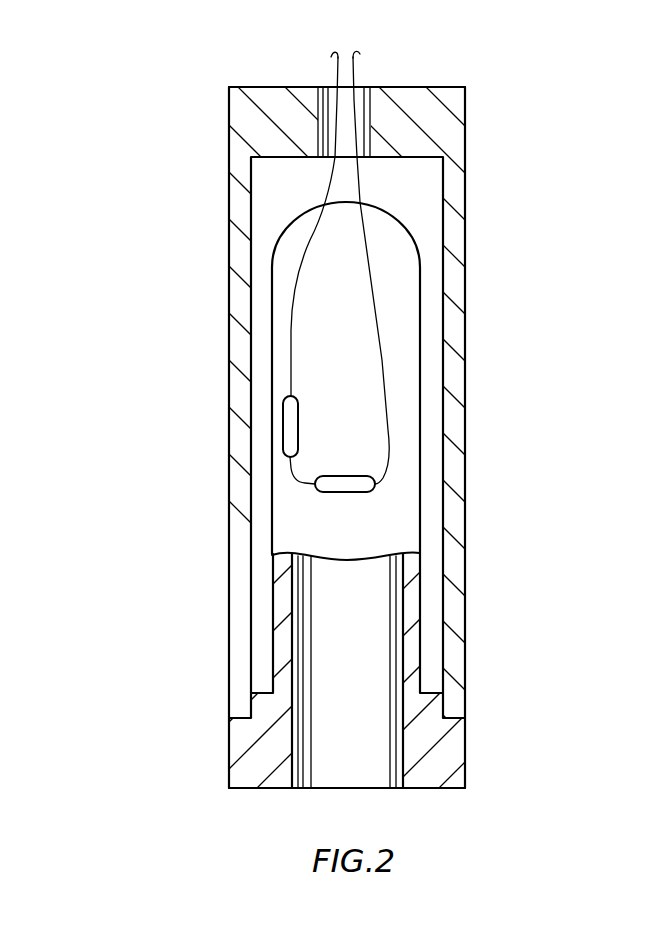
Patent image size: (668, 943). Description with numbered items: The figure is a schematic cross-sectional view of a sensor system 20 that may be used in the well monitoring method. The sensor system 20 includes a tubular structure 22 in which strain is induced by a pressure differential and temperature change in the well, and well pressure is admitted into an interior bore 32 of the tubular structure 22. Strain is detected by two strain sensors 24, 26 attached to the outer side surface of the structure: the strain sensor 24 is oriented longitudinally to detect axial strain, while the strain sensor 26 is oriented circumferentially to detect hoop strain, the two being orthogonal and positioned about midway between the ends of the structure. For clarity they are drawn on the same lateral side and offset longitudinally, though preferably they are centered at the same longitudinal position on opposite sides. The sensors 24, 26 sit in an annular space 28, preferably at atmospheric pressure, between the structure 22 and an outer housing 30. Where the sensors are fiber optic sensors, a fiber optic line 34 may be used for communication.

The sensor system 20 is at (543, 121).
The tubular structure 22 is at (420, 605).
The strain sensor 24 is at (283, 428).
The strain sensor 26 is at (355, 492).
The annular space 28 is at (263, 349).
The outer housing 30 is at (466, 277).
The interior bore 32 is at (347, 767).
The fiber optic line 34 is at (337, 72).